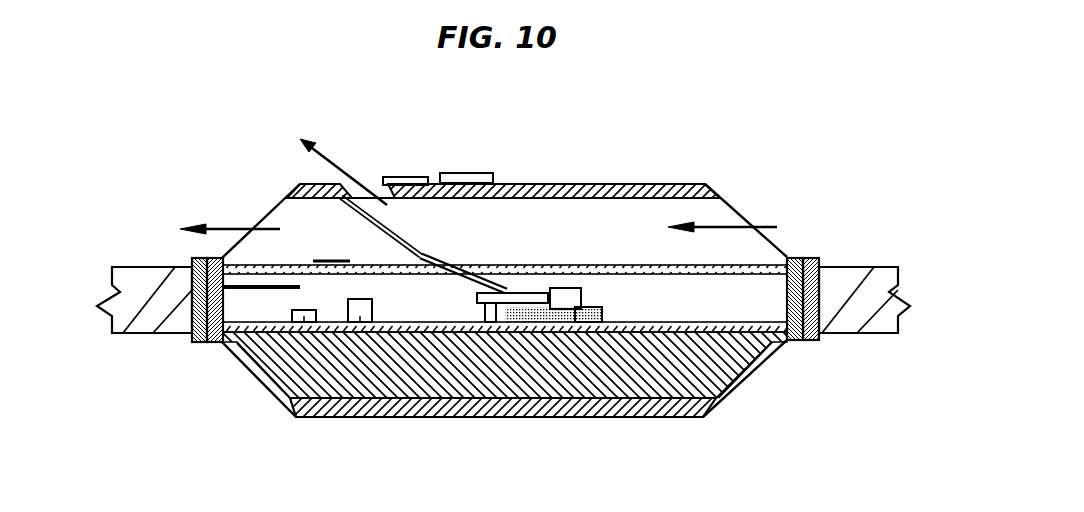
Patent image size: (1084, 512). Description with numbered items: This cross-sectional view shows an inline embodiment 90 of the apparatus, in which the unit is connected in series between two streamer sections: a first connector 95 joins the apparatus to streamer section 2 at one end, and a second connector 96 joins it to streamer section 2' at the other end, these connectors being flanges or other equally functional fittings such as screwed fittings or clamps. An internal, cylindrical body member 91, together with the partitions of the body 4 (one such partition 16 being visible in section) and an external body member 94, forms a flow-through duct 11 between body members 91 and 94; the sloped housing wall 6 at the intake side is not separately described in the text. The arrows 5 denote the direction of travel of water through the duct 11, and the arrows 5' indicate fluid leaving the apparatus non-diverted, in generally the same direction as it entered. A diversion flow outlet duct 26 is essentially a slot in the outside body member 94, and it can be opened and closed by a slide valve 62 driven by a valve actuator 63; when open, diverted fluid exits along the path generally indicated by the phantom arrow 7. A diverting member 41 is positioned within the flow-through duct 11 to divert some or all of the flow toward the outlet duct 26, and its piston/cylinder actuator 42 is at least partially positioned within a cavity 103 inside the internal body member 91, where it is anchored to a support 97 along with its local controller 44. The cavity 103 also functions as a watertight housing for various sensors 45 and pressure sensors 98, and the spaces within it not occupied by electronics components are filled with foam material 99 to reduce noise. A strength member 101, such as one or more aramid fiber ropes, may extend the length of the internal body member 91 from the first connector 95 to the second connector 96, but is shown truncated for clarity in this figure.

The streamer section 2 is at (144, 269).
The streamer section 2' is at (864, 267).
The body 4 is at (675, 417).
The direction of travel of water 5 is at (746, 191).
The non-diverted fluid flow 5' is at (478, 200).
The housing side wall 6 is at (287, 212).
The diverted fluid flow 7 is at (345, 172).
The flow-through duct 11 is at (543, 184).
The partition 16 is at (269, 387).
The diversion flow outlet duct 26 is at (378, 184).
The diversion member 41 is at (349, 254).
The piston/cylinder actuator 42 is at (458, 275).
The local controller 44 is at (593, 333).
The sensors 45 is at (296, 324).
The slide valve 62 is at (414, 177).
The valve actuator 63 is at (478, 173).
The inline embodiment 90 is at (828, 155).
The internal body member 91 is at (737, 383).
The external body member 94 is at (660, 184).
The first connector 95 is at (207, 343).
The second connector 96 is at (795, 342).
The support 97 is at (490, 333).
The pressure sensors 98 is at (357, 324).
The foam material 99 is at (550, 333).
The strength member 101 is at (262, 294).
The cavity 103 is at (643, 288).